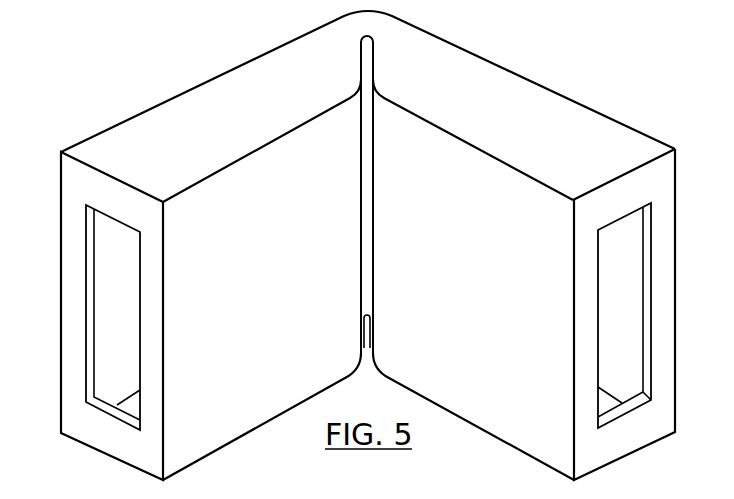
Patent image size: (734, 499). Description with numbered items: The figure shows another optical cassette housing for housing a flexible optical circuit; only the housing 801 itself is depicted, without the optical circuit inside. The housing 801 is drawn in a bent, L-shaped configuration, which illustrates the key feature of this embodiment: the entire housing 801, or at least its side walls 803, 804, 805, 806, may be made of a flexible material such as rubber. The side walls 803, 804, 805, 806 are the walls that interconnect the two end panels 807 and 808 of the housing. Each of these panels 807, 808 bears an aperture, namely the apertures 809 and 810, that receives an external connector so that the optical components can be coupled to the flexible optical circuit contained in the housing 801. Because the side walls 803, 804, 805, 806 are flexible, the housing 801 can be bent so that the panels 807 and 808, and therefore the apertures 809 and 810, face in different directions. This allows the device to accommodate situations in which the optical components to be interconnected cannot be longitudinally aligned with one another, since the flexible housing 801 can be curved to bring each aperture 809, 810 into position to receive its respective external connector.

The housing 801 is at (549, 41).
The side wall 803 is at (235, 413).
The side wall 804 is at (627, 145).
The side wall 805 is at (619, 278).
The side wall 806 is at (132, 407).
The panel 807 is at (74, 177).
The panel 808 is at (637, 432).
The aperture 809 is at (87, 253).
The aperture 810 is at (647, 322).